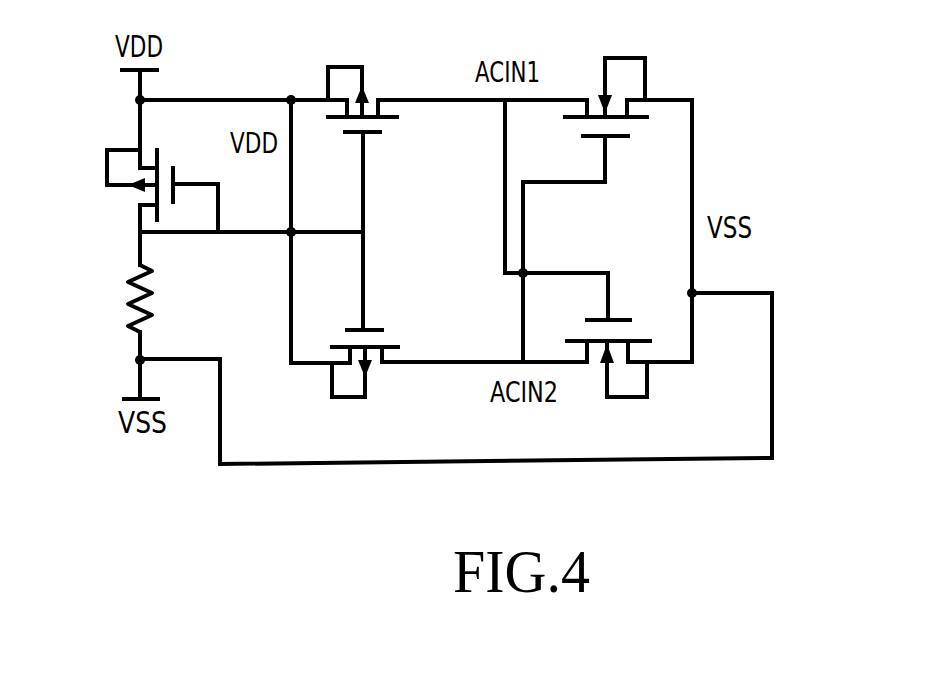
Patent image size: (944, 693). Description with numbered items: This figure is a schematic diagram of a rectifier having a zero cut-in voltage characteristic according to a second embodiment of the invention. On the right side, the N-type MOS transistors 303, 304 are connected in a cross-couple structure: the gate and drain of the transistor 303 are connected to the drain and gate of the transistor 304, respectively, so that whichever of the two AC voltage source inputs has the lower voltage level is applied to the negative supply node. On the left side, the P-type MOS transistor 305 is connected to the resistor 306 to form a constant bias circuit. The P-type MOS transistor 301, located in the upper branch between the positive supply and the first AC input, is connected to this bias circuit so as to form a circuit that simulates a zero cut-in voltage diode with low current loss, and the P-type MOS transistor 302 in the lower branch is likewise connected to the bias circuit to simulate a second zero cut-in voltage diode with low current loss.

The P-type MOS transistor 301 is at (377, 87).
The P-type MOS transistor 302 is at (390, 330).
The N-type MOS transistor 303 is at (653, 72).
The N-type MOS transistor 304 is at (622, 307).
The P-type MOS transistor 305 is at (122, 198).
The resistor 306 is at (122, 318).